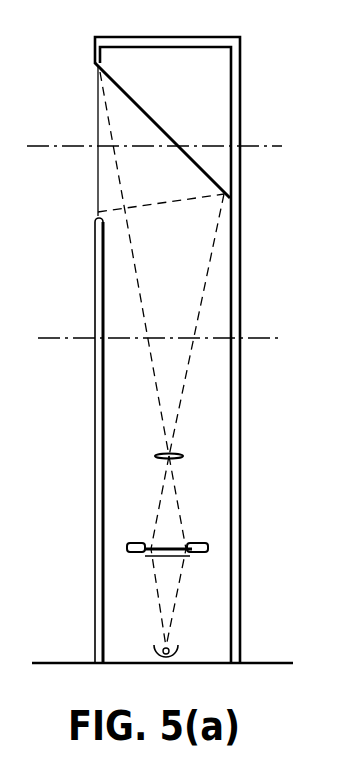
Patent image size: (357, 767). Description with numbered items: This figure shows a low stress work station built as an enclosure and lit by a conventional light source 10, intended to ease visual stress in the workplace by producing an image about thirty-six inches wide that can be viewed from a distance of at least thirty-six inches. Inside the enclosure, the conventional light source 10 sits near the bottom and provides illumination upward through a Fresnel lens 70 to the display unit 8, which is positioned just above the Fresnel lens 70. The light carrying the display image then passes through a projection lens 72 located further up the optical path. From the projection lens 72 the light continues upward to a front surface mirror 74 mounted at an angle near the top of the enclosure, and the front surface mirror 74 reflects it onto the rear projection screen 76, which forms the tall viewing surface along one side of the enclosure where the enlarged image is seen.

The front surface mirror 74 is at (140, 108).
The rear projection screen 76 is at (97, 113).
The projection lens 72 is at (183, 459).
The Fresnel lens 70 is at (190, 556).
The display unit 8 is at (207, 543).
The conventional light source 10 is at (180, 645).